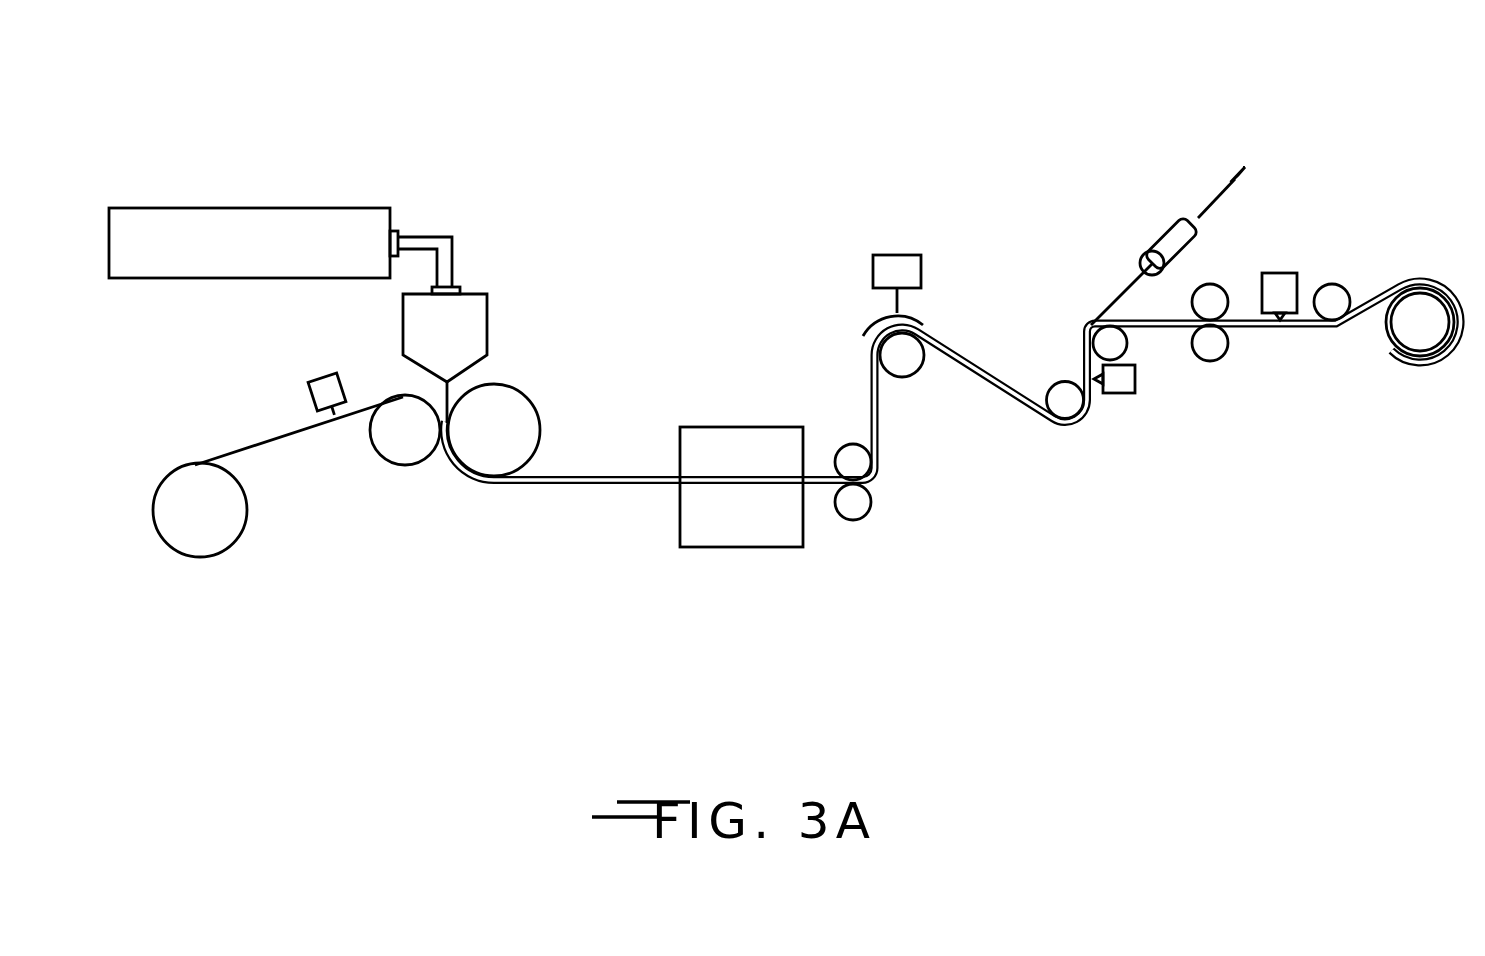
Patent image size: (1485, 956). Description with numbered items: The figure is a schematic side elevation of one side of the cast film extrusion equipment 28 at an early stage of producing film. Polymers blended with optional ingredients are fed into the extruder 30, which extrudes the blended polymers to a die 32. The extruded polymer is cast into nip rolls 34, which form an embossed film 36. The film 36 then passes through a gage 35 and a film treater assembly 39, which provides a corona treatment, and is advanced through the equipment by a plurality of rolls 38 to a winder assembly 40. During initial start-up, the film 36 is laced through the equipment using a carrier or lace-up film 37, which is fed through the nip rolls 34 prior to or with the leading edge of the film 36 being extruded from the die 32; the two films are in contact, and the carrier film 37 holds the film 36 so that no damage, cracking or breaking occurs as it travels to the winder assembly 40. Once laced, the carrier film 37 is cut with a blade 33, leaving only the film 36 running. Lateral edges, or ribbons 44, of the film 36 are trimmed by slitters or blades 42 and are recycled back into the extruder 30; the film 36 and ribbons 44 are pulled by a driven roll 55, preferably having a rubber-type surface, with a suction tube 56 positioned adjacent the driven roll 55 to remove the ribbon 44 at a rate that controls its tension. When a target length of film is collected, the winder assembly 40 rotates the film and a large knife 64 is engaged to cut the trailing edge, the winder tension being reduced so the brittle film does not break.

The film extrusion equipment 28 is at (622, 94).
The extruder 30 is at (310, 208).
The die 32 is at (487, 320).
The blade 33 is at (325, 376).
The nip rolls 34 is at (462, 478).
The gage 35 is at (742, 548).
The film 36 is at (603, 477).
The carrier film 37 is at (238, 450).
The rolls 38 is at (873, 465).
The film treater assembly 39 is at (905, 255).
The winder assembly 40 is at (1414, 374).
The slitters or blades 42 is at (1117, 393).
The ribbons 44 is at (1120, 290).
The driven roll 55 is at (1085, 325).
The suction tube 56 is at (1146, 250).
The large knife 64 is at (1277, 273).